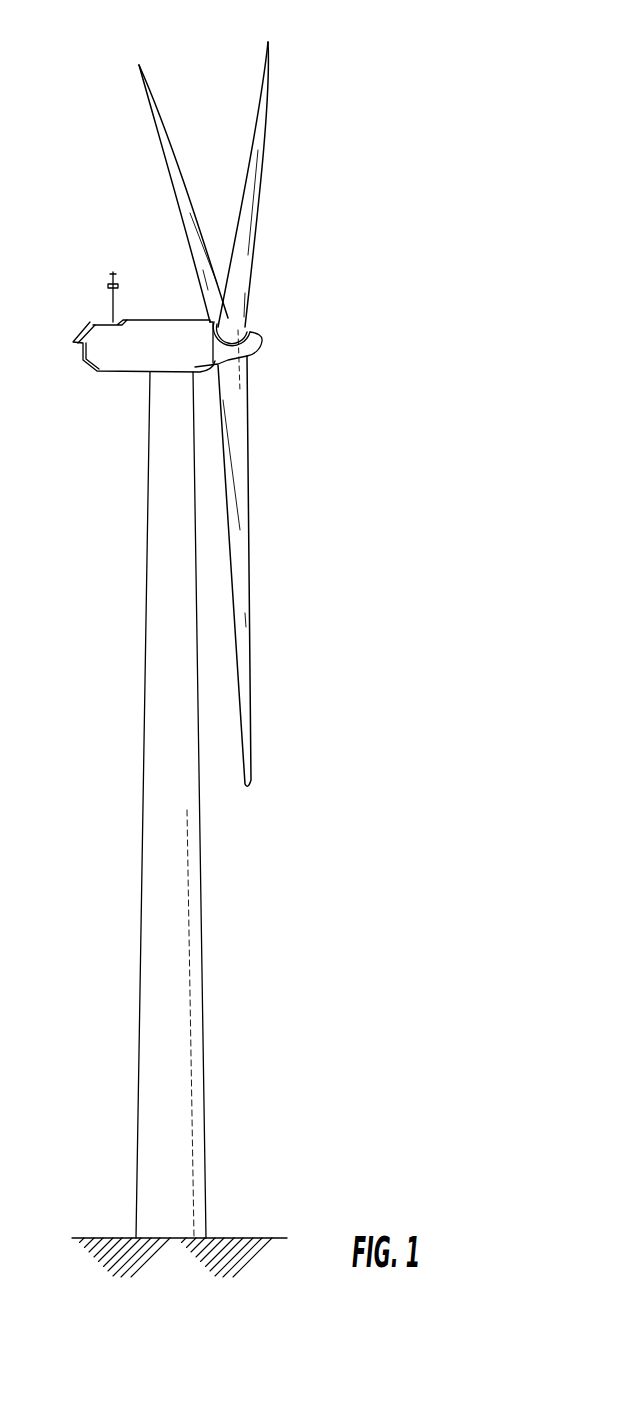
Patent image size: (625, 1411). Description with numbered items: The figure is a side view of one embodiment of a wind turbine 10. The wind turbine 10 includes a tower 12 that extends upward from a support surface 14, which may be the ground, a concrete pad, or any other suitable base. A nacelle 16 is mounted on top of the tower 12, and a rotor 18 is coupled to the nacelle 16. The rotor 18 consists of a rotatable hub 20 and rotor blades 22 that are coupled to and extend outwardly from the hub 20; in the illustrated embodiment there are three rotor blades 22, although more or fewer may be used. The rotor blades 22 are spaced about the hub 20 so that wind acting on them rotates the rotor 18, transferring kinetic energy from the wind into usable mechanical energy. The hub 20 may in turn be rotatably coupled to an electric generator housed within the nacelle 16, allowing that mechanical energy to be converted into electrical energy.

The wind turbine 10 is at (450, 160).
The tower 12 is at (182, 877).
The support surface 14 is at (115, 1238).
The nacelle 16 is at (120, 372).
The rotor 18 is at (313, 273).
The rotatable hub 20 is at (262, 340).
The rotor blade 22 is at (252, 160).